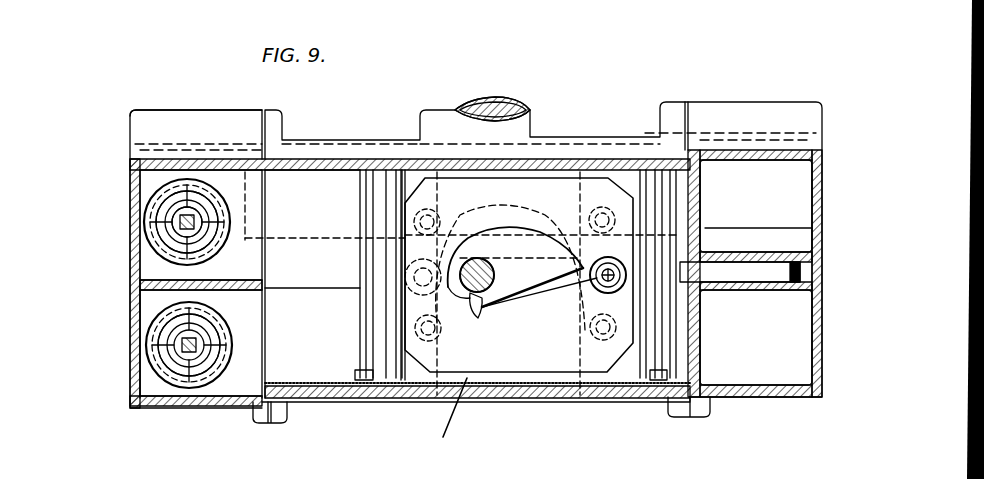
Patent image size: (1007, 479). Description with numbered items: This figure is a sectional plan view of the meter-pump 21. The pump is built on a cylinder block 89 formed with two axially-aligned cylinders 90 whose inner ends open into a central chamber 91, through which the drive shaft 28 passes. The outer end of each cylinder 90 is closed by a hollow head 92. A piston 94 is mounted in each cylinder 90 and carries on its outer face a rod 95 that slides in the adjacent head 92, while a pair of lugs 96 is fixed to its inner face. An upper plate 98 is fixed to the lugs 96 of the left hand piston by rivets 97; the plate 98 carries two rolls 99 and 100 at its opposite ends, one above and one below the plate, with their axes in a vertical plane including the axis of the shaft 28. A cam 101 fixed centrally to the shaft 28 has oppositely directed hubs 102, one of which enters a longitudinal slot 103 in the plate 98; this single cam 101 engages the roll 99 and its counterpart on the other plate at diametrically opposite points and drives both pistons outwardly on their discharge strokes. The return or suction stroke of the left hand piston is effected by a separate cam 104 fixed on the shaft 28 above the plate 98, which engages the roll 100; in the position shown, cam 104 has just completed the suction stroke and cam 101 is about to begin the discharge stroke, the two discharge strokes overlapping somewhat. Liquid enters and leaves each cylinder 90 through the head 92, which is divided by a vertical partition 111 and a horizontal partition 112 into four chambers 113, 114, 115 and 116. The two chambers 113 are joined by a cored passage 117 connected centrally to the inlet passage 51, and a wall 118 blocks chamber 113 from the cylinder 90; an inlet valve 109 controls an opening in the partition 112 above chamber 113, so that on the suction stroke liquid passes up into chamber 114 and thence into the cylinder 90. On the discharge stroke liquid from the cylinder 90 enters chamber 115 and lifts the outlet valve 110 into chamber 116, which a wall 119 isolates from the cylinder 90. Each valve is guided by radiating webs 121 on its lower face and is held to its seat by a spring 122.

The meter-pump 21 is at (606, 110).
The drive shaft 28 is at (478, 318).
The inlet passage 51 is at (500, 112).
The cylinder block 89 is at (317, 407).
The cylinder 90 is at (278, 188).
The central chamber 91 is at (442, 422).
The head 92 is at (134, 394).
The piston 94 is at (362, 215).
The rod 95 is at (790, 272).
The lug 96 is at (402, 167).
The rivet 97 is at (407, 170).
The upper plate 98 is at (500, 362).
The roll 99 is at (470, 202).
The roll 100 is at (364, 290).
The cam 101 is at (603, 219).
The hub 102 is at (487, 300).
The longitudinal slot 103 is at (567, 285).
The cam 104 is at (508, 230).
The inlet valve 109 is at (160, 218).
The outlet valve 110 is at (167, 315).
The vertical partition 111 is at (152, 272).
The horizontal partition 112 is at (228, 178).
The chamber 113 is at (800, 243).
The chamber 114 is at (147, 193).
The chamber 115 is at (812, 350).
The chamber 116 is at (150, 373).
The cored passage 117 is at (320, 158).
The wall 118 is at (700, 207).
The wall 119 is at (263, 371).
The radiating web 121 is at (212, 160).
The spring 122 is at (177, 200).